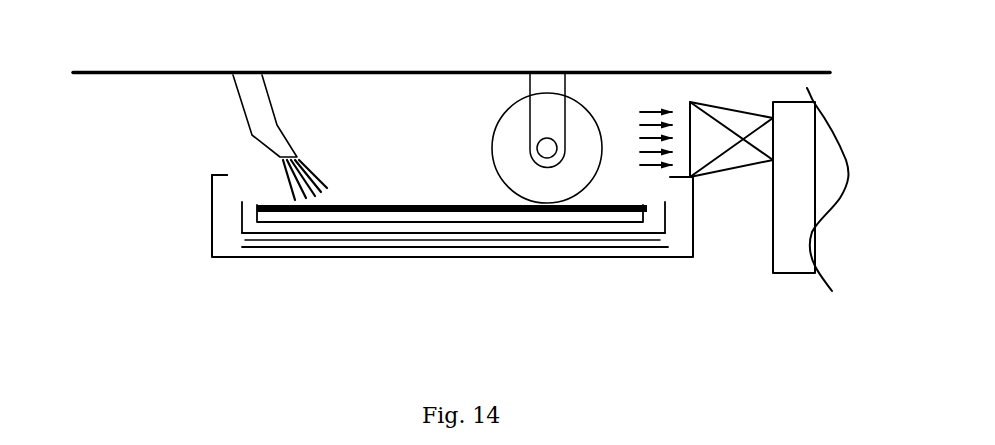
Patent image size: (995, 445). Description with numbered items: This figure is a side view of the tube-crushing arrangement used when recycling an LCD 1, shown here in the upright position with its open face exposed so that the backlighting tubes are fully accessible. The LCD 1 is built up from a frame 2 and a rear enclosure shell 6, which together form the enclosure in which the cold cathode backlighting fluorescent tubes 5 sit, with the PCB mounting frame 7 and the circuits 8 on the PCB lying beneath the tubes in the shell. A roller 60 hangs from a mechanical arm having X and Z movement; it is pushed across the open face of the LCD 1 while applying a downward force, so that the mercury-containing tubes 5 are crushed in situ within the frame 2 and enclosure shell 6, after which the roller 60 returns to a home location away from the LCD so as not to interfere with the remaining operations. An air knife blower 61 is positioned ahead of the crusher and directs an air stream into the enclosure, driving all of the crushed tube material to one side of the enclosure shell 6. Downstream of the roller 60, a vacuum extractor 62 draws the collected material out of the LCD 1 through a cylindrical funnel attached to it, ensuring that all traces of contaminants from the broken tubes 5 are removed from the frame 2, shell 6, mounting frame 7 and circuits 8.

The LCD 1 is at (170, 222).
The frame 2 is at (207, 232).
The cold cathode backlighting fluorescent tubes 5 is at (400, 217).
The rear enclosure shell 6 is at (583, 235).
The PCB mounting frame 7 is at (273, 242).
The circuits 8 is at (282, 247).
The roller 60 is at (580, 95).
The air knife blower 61 is at (270, 96).
The vacuum extractor 62 is at (318, 164).